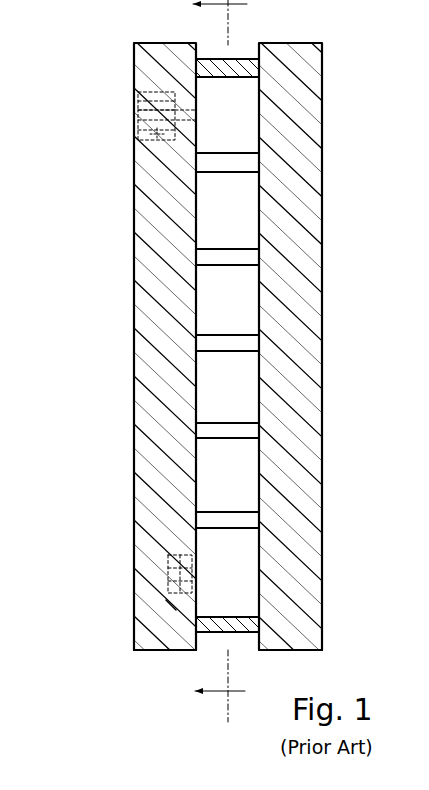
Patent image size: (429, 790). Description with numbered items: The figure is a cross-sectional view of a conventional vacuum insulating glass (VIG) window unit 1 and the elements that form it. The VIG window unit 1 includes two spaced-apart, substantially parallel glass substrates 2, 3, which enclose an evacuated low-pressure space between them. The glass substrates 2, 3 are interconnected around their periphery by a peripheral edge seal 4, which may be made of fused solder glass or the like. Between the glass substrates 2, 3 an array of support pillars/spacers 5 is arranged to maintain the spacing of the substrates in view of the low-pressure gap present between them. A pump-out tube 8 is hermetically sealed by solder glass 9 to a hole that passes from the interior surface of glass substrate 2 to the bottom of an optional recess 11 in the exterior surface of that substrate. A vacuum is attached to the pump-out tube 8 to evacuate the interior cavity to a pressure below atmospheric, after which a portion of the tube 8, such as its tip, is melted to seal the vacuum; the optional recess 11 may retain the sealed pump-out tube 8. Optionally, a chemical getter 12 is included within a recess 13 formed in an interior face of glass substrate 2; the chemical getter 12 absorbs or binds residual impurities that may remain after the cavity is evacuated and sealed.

The VIG window unit 1 is at (335, 148).
The glass substrate 2 is at (145, 409).
The glass substrate 3 is at (297, 253).
The peripheral edge seal 4 is at (238, 73).
The support pillars/spacers 5 is at (218, 522).
The pump-out tube 8 is at (150, 115).
The solder glass 9 is at (168, 99).
The recess 11 is at (157, 138).
The chemical getter 12 is at (168, 562).
The recess 13 is at (170, 603).